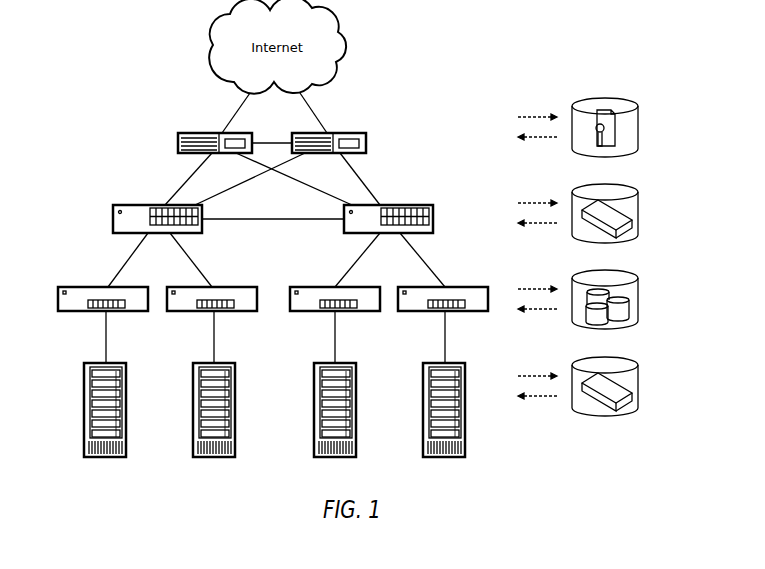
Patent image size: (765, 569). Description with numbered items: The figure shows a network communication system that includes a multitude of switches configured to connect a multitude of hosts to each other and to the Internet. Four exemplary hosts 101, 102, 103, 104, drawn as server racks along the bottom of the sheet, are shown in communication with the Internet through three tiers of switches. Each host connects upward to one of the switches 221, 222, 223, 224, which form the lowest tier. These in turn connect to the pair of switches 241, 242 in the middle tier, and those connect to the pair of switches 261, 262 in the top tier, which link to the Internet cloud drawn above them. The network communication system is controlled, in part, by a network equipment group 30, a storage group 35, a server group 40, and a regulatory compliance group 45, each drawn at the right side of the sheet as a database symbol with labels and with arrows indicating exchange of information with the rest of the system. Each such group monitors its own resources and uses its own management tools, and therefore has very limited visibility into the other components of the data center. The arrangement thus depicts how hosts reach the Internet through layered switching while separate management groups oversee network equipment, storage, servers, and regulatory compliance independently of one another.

The host 101 is at (105, 458).
The host 102 is at (214, 458).
The host 103 is at (338, 458).
The host 104 is at (448, 458).
The switch 221 is at (97, 313).
The switch 222 is at (206, 313).
The switch 223 is at (325, 313).
The switch 224 is at (435, 313).
The switch 241 is at (132, 205).
The switch 242 is at (352, 234).
The switch 261 is at (178, 141).
The switch 262 is at (365, 141).
The network equipment group 30 is at (641, 388).
The storage group 35 is at (641, 301).
The server group 40 is at (641, 215).
The regulatory compliance group 45 is at (641, 129).